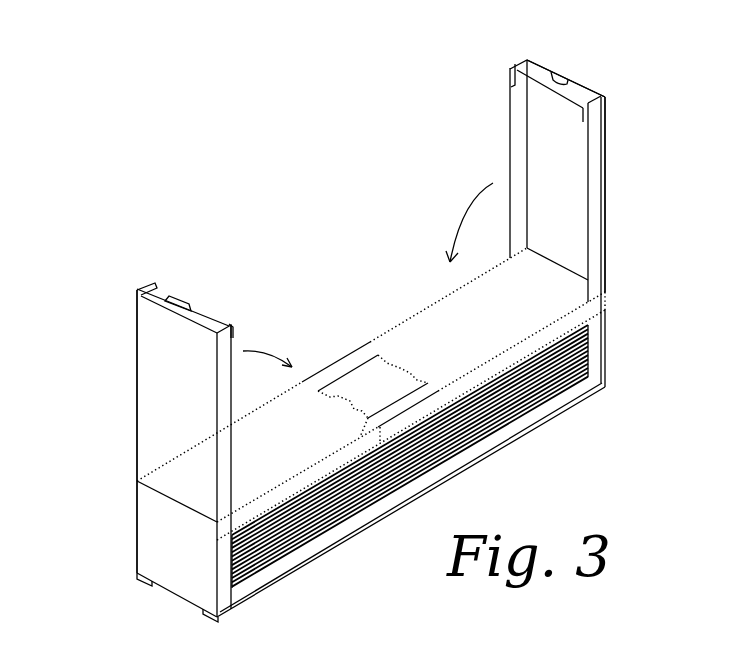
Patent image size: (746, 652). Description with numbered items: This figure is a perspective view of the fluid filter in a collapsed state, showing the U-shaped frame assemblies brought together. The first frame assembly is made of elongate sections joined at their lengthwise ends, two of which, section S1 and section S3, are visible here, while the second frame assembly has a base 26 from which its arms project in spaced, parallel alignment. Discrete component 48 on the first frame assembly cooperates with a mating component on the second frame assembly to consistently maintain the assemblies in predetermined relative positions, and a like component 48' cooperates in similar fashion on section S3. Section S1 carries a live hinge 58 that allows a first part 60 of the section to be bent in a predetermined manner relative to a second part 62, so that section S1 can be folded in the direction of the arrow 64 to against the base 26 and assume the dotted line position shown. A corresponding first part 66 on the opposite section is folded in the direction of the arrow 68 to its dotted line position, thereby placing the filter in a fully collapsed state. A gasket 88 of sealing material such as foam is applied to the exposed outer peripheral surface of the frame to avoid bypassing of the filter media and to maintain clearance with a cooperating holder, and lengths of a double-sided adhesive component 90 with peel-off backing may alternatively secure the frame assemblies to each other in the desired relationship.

The base 26 is at (365, 382).
The discrete component 48 is at (188, 272).
The discrete component 48' is at (599, 55).
The live hinge 58 is at (175, 505).
The first part 60 is at (153, 333).
The second part 62 is at (178, 573).
The arrow 64 is at (263, 350).
The first part 66 is at (560, 192).
The arrow 68 is at (467, 210).
The gasket 88 is at (332, 373).
The double-sided adhesive component 90 is at (547, 77).
The elongate section S1 is at (163, 378).
The elongate section S3 is at (605, 197).